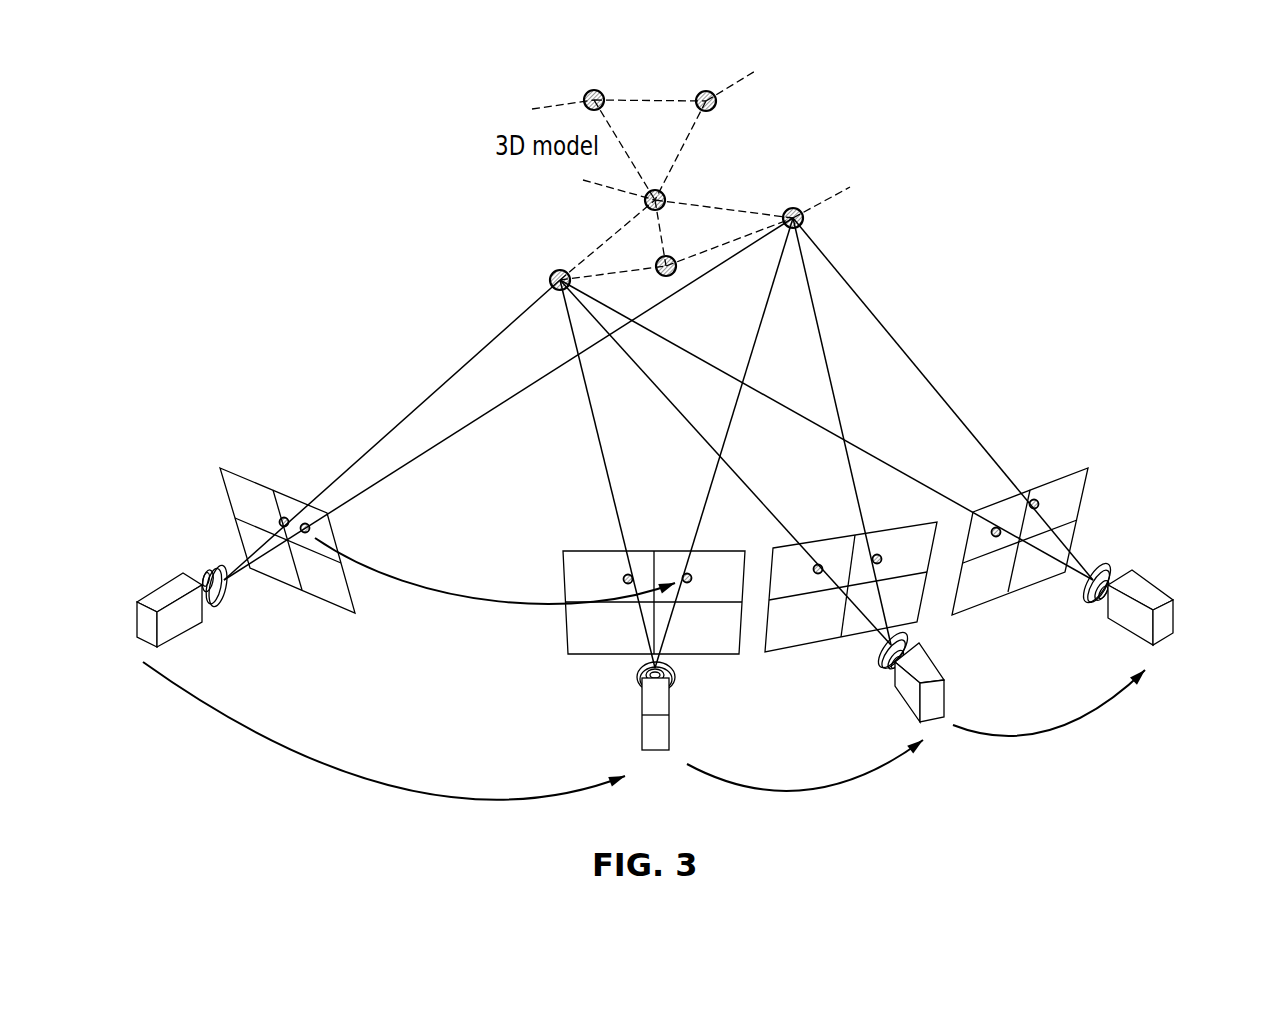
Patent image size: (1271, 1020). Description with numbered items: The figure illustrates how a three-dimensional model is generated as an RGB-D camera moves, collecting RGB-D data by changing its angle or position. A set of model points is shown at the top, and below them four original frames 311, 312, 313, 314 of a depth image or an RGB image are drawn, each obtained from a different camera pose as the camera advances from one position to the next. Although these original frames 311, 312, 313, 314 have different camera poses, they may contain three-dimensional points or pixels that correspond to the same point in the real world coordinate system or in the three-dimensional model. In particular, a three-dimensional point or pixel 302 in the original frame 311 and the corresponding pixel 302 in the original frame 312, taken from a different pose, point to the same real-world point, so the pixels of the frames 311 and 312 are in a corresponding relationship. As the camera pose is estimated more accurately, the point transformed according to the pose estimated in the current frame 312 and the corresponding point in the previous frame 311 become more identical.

The 3D point or pixel 302 is at (496, 591).
The original frame 311 is at (320, 602).
The original frame 312 is at (593, 654).
The original frame 313 is at (803, 647).
The original frame 314 is at (985, 602).